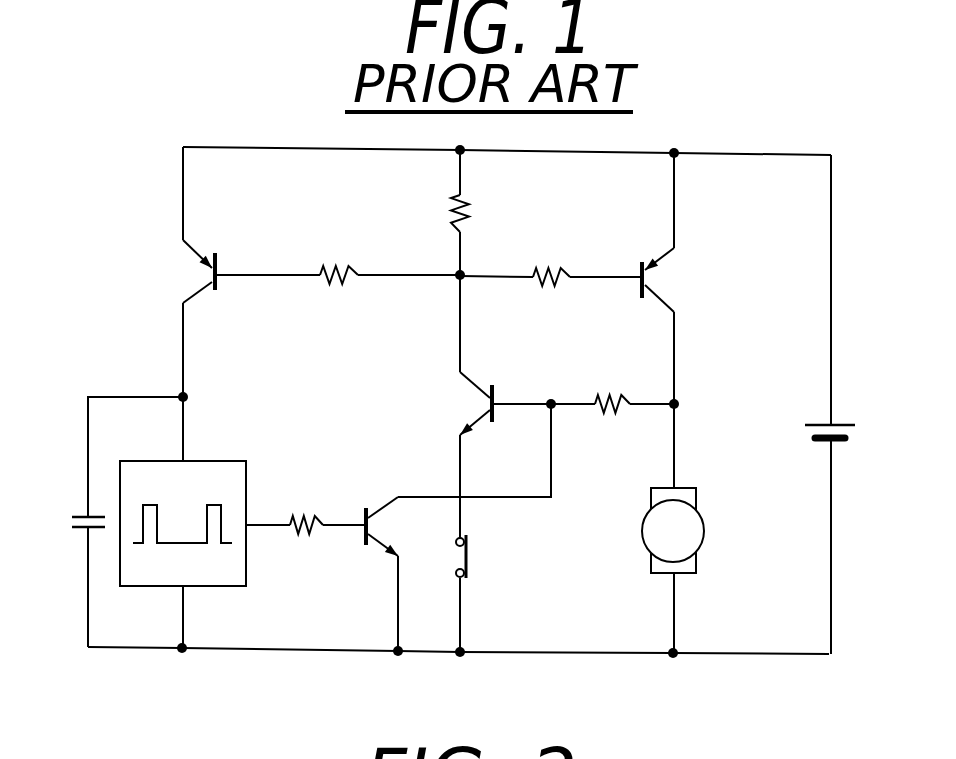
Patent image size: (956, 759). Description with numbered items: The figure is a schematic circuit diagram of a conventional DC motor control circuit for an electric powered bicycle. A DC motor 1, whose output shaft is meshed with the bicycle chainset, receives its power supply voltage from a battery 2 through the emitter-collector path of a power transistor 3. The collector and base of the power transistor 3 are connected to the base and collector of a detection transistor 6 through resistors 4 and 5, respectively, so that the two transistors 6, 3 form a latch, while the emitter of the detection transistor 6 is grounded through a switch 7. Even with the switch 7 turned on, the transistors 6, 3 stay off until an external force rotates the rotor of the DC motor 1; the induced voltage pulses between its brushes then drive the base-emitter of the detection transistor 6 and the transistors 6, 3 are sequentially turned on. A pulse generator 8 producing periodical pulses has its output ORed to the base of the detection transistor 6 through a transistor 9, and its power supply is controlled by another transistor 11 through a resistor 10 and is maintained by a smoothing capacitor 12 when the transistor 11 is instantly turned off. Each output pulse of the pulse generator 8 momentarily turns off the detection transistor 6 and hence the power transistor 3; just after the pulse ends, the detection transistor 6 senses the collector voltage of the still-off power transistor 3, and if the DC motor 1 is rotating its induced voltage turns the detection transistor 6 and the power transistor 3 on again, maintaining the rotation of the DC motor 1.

The DC motor 1 is at (704, 534).
The battery 2 is at (818, 422).
The power transistor 3 is at (668, 297).
The resistor 4 is at (604, 395).
The resistor 5 is at (552, 266).
The detection transistor 6 is at (473, 388).
The switch 7 is at (470, 560).
The pulse generator 8 is at (212, 461).
The transistor 9 is at (385, 512).
The resistor 10 is at (338, 263).
The transistor 11 is at (185, 303).
The smoothing capacitor 12 is at (82, 516).